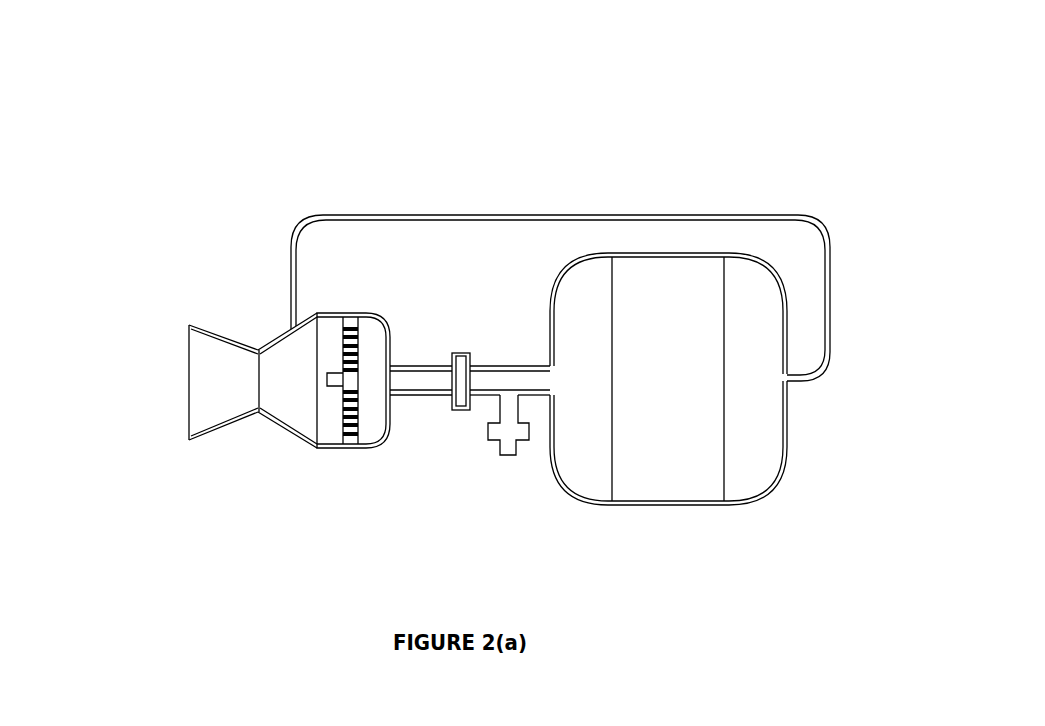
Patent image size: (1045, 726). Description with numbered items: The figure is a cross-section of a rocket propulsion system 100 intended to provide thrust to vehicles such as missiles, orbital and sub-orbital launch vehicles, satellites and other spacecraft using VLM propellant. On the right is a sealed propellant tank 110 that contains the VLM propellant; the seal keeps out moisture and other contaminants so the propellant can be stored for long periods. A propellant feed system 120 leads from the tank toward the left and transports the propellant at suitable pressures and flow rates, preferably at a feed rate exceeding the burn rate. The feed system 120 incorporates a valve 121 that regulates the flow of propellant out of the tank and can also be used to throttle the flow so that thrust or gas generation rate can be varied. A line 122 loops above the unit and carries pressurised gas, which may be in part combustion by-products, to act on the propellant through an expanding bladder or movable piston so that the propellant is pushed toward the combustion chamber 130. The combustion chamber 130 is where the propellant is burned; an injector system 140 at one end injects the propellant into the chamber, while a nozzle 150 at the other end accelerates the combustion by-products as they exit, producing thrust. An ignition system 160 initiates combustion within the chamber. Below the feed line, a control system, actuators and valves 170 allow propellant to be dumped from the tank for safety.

The rocket propulsion system 100 is at (240, 146).
The propellant tank 110 is at (708, 492).
The propellant feed system 120 is at (488, 366).
The valve 121 is at (458, 362).
The line for pressurised gas 122 is at (527, 208).
The combustion chamber 130 is at (288, 382).
The injector system 140 is at (343, 428).
The nozzle 150 is at (217, 378).
The ignition system 160 is at (328, 386).
The control system, actuators and valves 170 is at (514, 430).